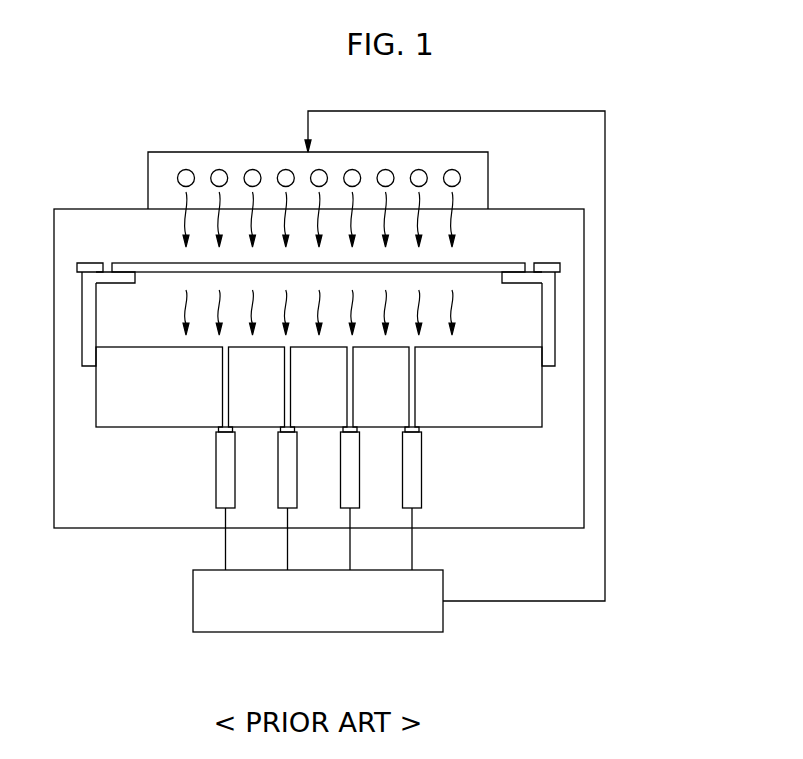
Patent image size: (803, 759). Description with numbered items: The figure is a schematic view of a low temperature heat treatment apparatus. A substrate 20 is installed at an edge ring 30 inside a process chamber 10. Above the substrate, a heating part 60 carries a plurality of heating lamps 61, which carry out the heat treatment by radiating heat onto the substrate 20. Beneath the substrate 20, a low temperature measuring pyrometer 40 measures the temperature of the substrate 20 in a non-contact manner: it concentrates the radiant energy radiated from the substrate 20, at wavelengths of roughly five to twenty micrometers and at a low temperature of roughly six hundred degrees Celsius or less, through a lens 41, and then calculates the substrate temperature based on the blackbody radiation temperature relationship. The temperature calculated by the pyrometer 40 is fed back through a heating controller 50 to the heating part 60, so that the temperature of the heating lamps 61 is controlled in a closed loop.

The process chamber 10 is at (557, 208).
The substrate 20 is at (503, 262).
The edge ring 30 is at (548, 262).
The low temperature measuring pyrometer 40 is at (216, 470).
The lens 41 is at (218, 430).
The heating controller 50 is at (193, 601).
The heating part 60 is at (218, 152).
The heating lamps 61 is at (452, 169).